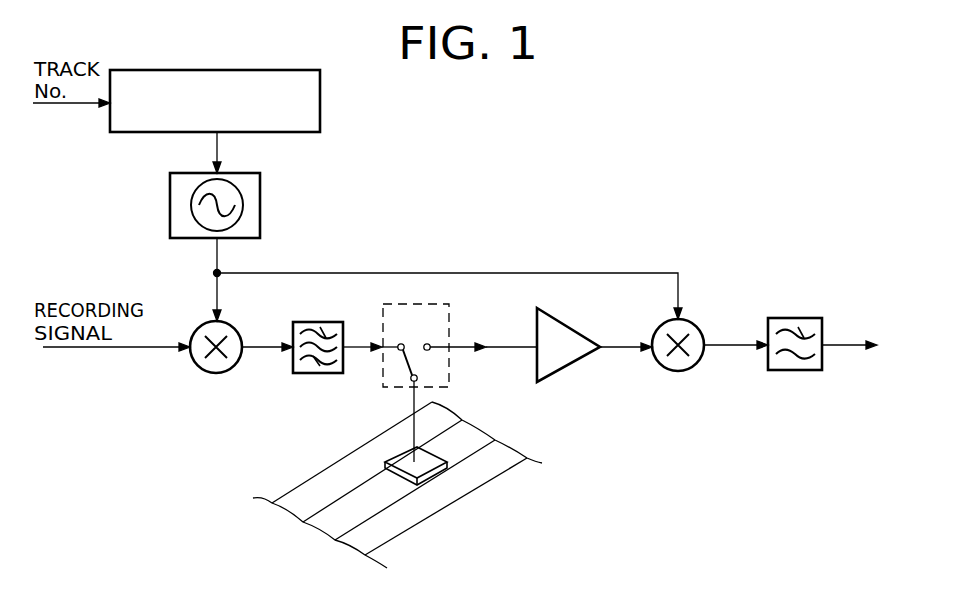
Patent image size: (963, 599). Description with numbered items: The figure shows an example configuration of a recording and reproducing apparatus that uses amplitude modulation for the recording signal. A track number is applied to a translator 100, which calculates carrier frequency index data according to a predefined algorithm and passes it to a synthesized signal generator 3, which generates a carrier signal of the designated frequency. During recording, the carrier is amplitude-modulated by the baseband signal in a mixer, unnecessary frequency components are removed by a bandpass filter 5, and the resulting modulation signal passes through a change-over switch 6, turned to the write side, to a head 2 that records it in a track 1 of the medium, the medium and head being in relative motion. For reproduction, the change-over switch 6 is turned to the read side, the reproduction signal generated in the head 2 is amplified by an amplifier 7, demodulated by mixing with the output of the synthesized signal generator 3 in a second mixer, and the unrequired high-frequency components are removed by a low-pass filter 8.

The translator 100 is at (320, 128).
The synthesized signal generator 3 is at (260, 219).
The bandpass filter 5 is at (308, 373).
The change-over switch 6 is at (397, 367).
The amplifier 7 is at (561, 368).
The low-pass filter 8 is at (801, 370).
The track 1 is at (477, 462).
The head 2 is at (428, 465).